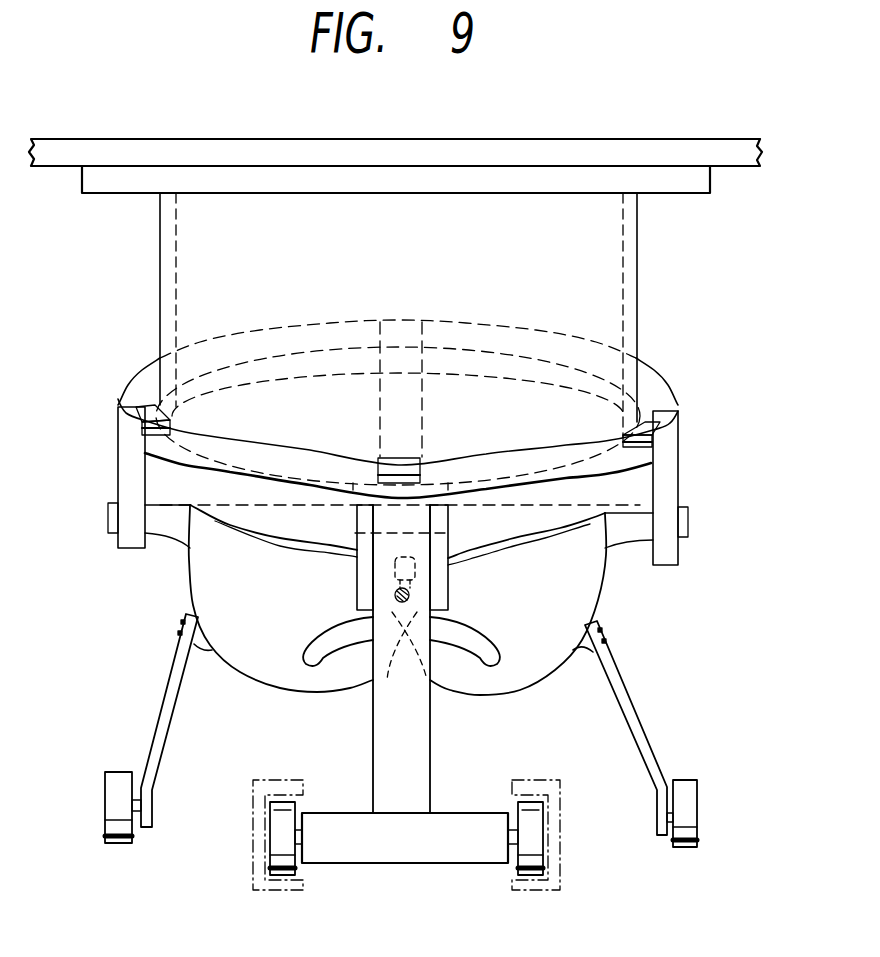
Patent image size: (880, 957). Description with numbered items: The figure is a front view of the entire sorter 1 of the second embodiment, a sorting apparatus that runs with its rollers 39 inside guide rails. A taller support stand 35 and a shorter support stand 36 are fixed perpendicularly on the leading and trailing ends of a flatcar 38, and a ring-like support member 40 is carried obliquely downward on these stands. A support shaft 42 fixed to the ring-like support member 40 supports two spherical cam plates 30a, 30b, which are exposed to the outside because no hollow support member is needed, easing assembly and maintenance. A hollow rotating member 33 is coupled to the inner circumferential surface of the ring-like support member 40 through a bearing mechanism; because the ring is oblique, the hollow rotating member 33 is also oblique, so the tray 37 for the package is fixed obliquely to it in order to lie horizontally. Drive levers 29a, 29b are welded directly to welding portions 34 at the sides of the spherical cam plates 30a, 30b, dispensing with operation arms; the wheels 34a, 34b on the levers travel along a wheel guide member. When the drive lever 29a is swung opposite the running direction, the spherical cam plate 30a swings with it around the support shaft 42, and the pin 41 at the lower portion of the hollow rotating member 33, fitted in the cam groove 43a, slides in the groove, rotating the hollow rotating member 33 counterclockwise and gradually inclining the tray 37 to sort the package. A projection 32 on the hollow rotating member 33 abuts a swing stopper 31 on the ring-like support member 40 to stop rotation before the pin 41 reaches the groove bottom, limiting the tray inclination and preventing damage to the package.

The sorter 1 is at (147, 250).
The drive lever 29a is at (633, 700).
The drive lever 29b is at (172, 670).
The spherical cam plate 30a is at (570, 589).
The spherical cam plate 30b is at (207, 582).
The swing stopper 31 is at (643, 424).
The projection 32 is at (406, 466).
The hollow rotating member 33 is at (597, 254).
The welding portion 34 is at (202, 645).
The wheel 34a is at (688, 782).
The wheel 34b is at (118, 782).
The support stand 35 is at (416, 320).
The support stand 36 is at (392, 732).
The tray 37 is at (678, 148).
The flatcar 38 is at (353, 864).
The roller 39 is at (285, 862).
The ring-like support member 40 is at (120, 438).
The pin 41 is at (446, 596).
The support shaft 42 is at (645, 528).
The cam groove 43a is at (485, 658).